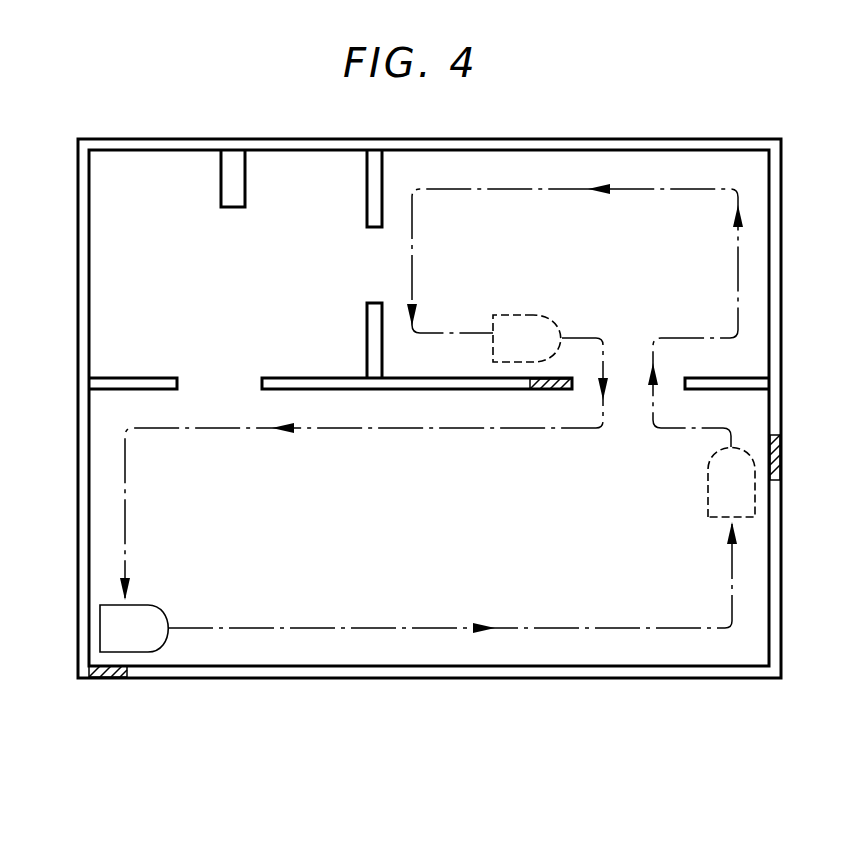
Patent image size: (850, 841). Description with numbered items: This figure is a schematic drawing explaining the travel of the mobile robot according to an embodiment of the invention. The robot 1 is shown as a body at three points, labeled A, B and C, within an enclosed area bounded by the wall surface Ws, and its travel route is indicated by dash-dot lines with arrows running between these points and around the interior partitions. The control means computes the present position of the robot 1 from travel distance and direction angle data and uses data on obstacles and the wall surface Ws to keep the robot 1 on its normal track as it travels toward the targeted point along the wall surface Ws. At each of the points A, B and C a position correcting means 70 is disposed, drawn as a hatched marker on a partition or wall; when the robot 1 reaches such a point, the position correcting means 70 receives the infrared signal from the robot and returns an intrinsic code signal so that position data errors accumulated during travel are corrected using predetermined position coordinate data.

The robot body 1 is at (524, 318).
The position correcting means 70 is at (550, 391).
The wall surface Ws is at (640, 668).